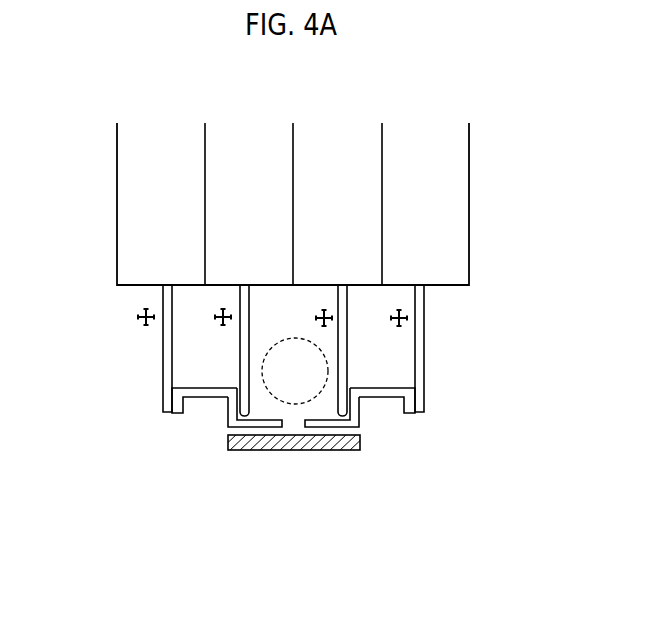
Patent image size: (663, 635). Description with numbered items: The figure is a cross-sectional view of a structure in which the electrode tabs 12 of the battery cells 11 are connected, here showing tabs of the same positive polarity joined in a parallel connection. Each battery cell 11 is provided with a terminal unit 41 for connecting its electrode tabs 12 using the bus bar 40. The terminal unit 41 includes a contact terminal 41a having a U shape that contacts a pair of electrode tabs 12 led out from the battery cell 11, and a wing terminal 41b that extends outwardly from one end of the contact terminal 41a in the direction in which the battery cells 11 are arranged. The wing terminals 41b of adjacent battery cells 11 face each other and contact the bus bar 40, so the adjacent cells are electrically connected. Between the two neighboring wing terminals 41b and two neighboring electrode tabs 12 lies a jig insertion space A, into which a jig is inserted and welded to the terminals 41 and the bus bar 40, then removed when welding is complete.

The battery cell 11 is at (143, 203).
The electrode tab 12 is at (163, 352).
The terminal unit 41 is at (295, 490).
The contact terminal 41a is at (212, 398).
The wing terminal 41b is at (255, 428).
The bus bar 40 is at (295, 452).
The jig insertion space A is at (320, 350).